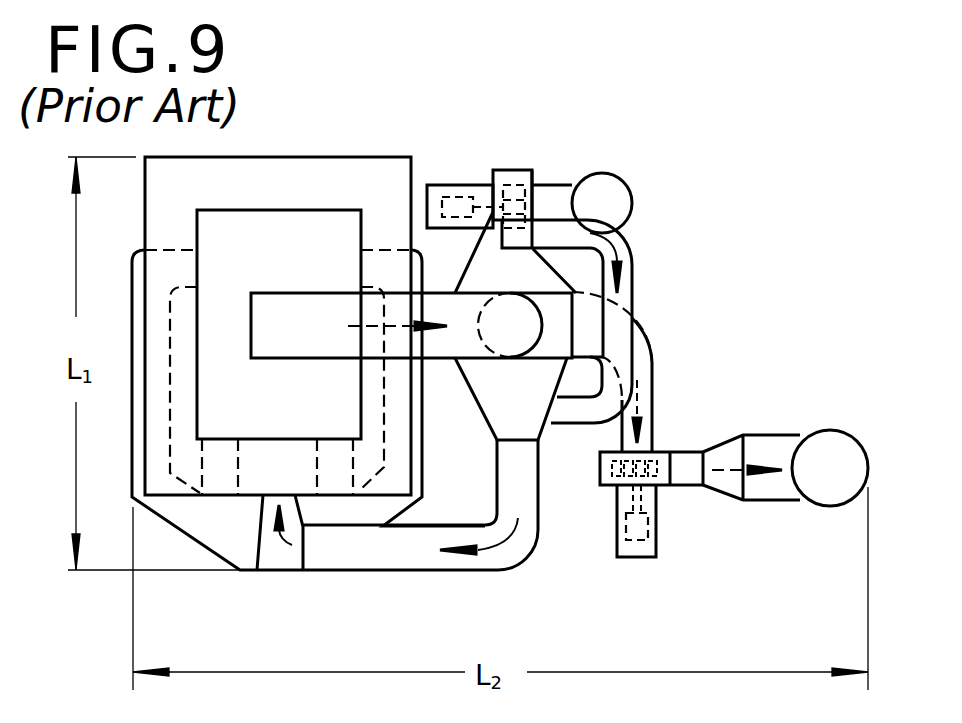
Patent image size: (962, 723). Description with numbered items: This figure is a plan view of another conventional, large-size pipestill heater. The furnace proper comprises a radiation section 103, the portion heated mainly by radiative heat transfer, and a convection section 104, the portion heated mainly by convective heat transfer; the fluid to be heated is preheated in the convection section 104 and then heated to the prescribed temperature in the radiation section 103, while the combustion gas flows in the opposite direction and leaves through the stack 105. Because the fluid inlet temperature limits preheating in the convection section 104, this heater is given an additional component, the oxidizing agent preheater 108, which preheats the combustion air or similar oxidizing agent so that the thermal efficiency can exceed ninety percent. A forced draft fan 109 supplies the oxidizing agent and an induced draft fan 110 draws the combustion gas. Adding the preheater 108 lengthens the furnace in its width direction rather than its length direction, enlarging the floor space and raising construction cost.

The radiation section 103 is at (283, 158).
The convection section 104 is at (307, 210).
The stack 105 is at (830, 431).
The preheater 108 is at (493, 408).
The forced draft fan 109 is at (515, 186).
The induced draft fan 110 is at (608, 470).